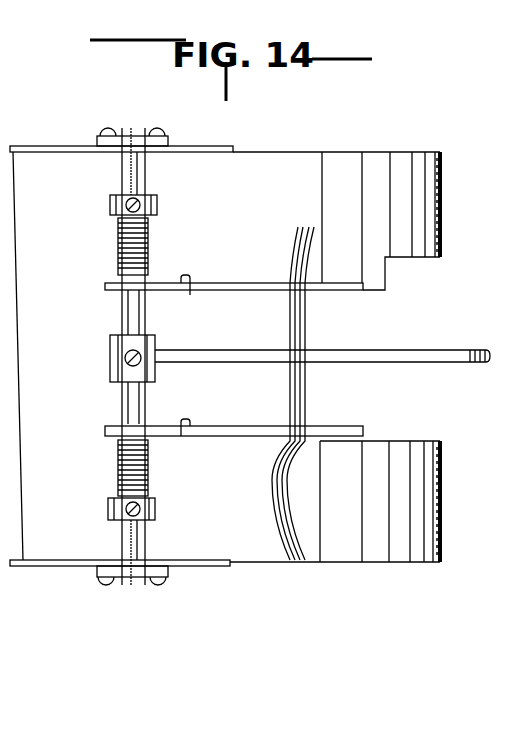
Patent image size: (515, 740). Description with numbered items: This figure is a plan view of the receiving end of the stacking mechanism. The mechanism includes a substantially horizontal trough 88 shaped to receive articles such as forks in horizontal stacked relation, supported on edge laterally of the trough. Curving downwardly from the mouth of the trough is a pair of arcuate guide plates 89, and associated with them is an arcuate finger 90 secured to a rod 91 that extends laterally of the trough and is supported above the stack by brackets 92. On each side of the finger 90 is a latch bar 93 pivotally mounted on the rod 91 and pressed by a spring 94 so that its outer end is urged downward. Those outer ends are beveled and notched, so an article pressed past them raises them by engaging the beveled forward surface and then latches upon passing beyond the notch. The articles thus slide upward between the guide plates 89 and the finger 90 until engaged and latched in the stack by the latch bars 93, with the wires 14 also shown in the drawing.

The wires 14 is at (301, 406).
The trough 88 is at (195, 146).
The arcuate guide plates 89 is at (344, 155).
The arcuate finger 90 is at (246, 350).
The rod 91 is at (124, 170).
The brackets 92 is at (145, 135).
The latch bars 93 is at (237, 282).
The springs 94 is at (120, 250).